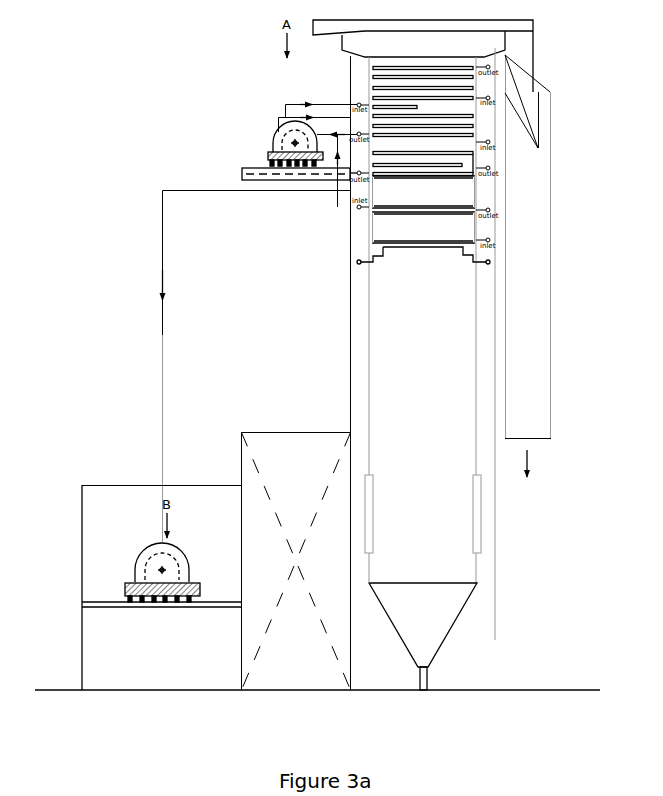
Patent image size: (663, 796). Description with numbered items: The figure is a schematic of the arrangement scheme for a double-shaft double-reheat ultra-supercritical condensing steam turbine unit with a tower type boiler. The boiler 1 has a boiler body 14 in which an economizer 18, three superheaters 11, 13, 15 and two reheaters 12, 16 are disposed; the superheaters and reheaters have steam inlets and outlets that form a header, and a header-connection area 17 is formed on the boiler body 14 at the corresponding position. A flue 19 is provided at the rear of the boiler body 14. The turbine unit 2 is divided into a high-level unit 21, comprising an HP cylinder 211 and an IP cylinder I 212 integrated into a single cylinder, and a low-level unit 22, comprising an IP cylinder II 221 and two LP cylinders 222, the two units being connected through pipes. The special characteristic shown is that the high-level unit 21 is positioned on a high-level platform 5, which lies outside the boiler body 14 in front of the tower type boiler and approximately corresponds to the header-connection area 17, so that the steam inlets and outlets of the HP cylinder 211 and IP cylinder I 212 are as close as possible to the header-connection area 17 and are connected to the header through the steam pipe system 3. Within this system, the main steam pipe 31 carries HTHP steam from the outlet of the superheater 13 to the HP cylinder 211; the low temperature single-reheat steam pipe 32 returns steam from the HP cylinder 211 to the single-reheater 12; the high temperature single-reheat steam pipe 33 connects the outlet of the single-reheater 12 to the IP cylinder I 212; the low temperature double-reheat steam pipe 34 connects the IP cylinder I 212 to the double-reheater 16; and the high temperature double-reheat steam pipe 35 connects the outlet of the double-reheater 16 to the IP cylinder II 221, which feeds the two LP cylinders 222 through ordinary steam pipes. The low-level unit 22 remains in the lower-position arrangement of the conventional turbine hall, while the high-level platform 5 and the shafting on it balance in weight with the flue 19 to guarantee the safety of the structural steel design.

The boiler 1 is at (487, 552).
The turbine unit 2 is at (185, 600).
The steam pipe system 3 is at (302, 147).
The high-level platform 5 is at (253, 170).
The superheater 11 is at (460, 252).
The single-reheater 12 is at (457, 118).
The superheater 13 is at (460, 227).
The boiler body 14 is at (447, 490).
The superheater 15 is at (460, 155).
The double-reheater 16 is at (460, 193).
The header-connection area 17 is at (362, 220).
The economizer 18 is at (457, 82).
The flue 19 is at (527, 285).
The high-level unit 21 is at (260, 131).
The low-level unit 22 is at (126, 544).
The main steam pipe 31 is at (340, 208).
The low temperature single-reheat steam pipe 32 is at (285, 103).
The high temperature single-reheat steam pipe 33 is at (323, 132).
The low temperature double-reheat steam pipe 34 is at (305, 115).
The high temperature double-reheat steam pipe 35 is at (187, 192).
The HP cylinder 211 is at (281, 148).
The IP cylinder I 212 is at (278, 135).
The IP cylinder II 221 is at (143, 570).
The LP cylinders 222 is at (143, 552).